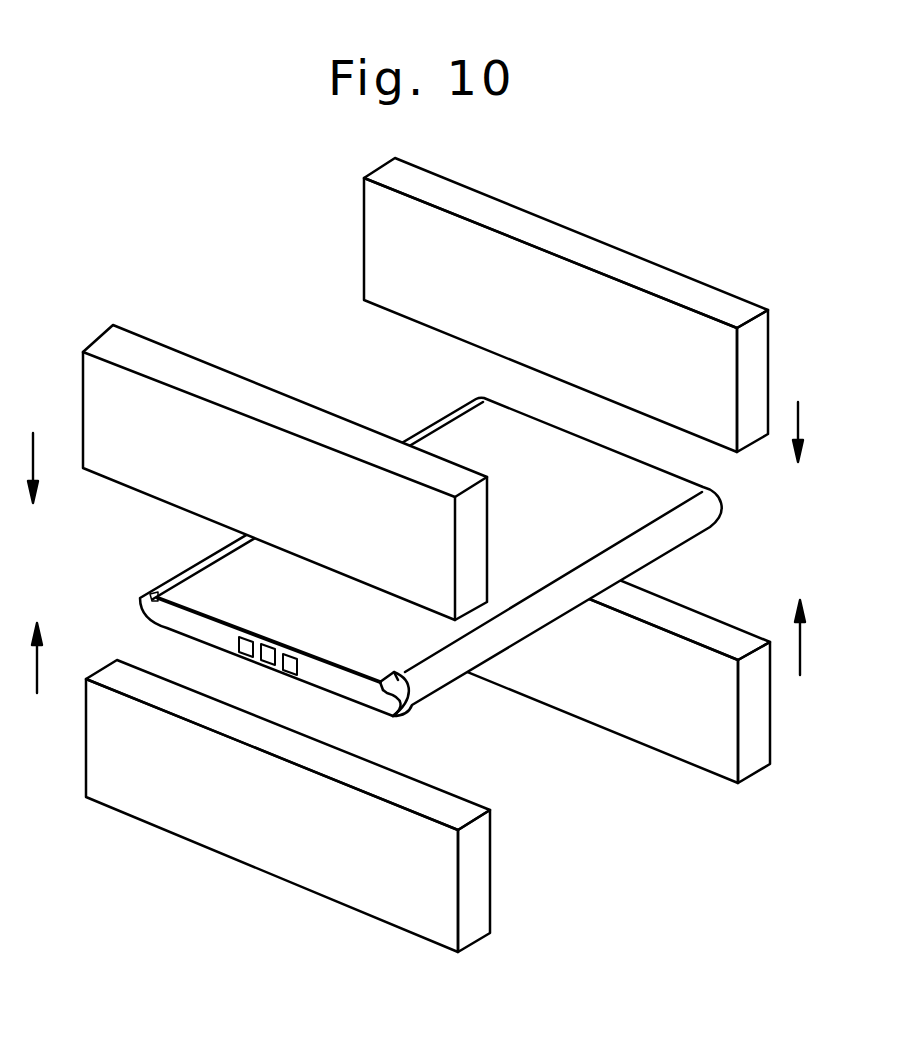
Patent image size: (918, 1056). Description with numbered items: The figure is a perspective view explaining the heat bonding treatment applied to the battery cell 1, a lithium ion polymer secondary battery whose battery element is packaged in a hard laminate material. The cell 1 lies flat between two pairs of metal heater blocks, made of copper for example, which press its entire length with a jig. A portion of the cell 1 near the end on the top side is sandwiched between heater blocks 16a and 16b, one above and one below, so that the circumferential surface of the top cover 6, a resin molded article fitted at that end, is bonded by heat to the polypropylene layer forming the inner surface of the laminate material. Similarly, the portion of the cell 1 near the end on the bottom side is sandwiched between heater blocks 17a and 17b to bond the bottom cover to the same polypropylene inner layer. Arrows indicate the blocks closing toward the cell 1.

The cell 1 is at (640, 510).
The top cover 6 is at (383, 703).
The heater block 16a is at (260, 395).
The heater block 16b is at (263, 857).
The heater block 17a is at (585, 245).
The heater block 17b is at (627, 730).